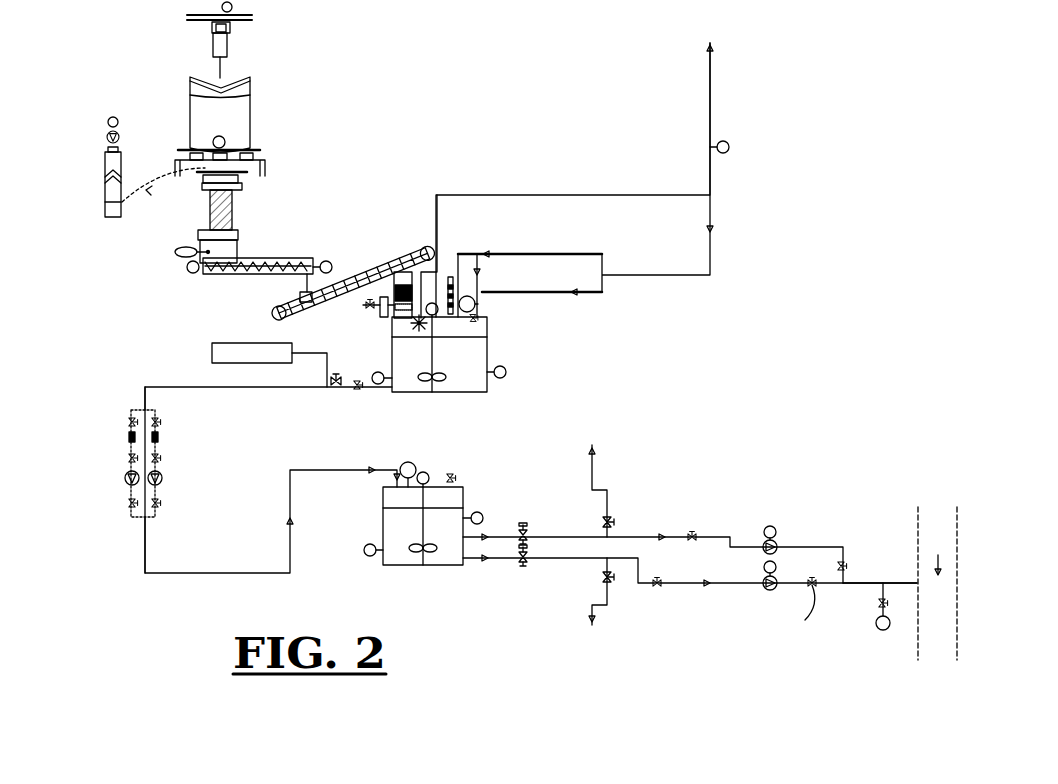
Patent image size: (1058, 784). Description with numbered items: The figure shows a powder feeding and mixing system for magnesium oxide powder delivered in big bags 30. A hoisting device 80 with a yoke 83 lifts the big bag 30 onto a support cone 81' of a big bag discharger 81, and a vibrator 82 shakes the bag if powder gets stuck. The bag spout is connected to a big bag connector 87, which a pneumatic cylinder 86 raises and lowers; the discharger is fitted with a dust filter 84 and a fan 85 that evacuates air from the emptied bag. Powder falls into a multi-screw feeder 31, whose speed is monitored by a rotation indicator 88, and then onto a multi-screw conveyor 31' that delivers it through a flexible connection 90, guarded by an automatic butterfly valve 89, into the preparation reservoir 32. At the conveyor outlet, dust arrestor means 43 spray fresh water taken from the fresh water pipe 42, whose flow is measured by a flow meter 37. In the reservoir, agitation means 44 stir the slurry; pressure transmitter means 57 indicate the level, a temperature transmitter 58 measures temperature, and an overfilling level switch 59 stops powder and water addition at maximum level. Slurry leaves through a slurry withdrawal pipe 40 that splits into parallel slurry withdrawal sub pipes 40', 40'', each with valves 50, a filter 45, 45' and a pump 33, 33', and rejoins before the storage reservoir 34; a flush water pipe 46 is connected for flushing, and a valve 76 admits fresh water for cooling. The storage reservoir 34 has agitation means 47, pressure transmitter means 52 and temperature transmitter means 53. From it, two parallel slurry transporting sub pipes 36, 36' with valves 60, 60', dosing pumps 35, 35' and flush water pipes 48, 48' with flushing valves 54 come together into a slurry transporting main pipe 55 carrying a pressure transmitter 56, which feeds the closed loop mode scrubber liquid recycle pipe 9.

The closed loop mode scrubber liquid recycle pipe 9 is at (937, 583).
The big bag 30 is at (221, 123).
The multi-screw feeder 31 is at (244, 262).
The multi-screw conveyor 31' is at (353, 270).
The preparation reservoir 32 is at (467, 380).
The pump 33 is at (98, 481).
The pump 33' is at (181, 489).
The storage reservoir 34 is at (443, 560).
The dosing pump 35 is at (781, 523).
The dosing pump 35' is at (755, 594).
The slurry transporting sub pipe 36 is at (655, 524).
The slurry transporting sub pipe 36' is at (690, 617).
The flow meter 37 is at (730, 147).
The slurry withdrawal pipe 40 is at (272, 498).
The slurry withdrawal sub pipe 40' is at (108, 480).
The slurry withdrawal sub pipe 40'' is at (211, 480).
The fresh water pipe 42 is at (710, 83).
The dust arrestor means 43 is at (418, 324).
The agitation means 44 is at (433, 383).
The filter 45 is at (94, 435).
The filter 45' is at (197, 442).
The flush water pipe 46 is at (212, 356).
The agitation means 47 is at (417, 552).
The flush water pipe 48 is at (608, 491).
The flush water pipe 48' is at (623, 605).
The valve 50 is at (128, 422).
The pressure transmitter means 52 is at (367, 545).
The temperature transmitter means 53 is at (485, 483).
The flushing valve 54 is at (616, 520).
The slurry transporting main pipe 55 is at (867, 582).
The pressure transmitter 56 is at (880, 630).
The pressure transmitter means 57 is at (379, 384).
The temperature transmitter 58 is at (507, 374).
The overfilling level switch 59 is at (476, 303).
The valve 60 is at (522, 504).
The valve 60' is at (530, 580).
The valve 76 is at (340, 382).
The hoisting device 80 is at (220, 46).
The big bag discharger 81 is at (239, 154).
The support cone 81' is at (277, 172).
The vibrator 82 is at (212, 142).
The yoke 83 is at (250, 77).
The dust filter 84 is at (110, 198).
The fan 85 is at (106, 137).
The pneumatic cylinder 86 is at (240, 183).
The big bag connector 87 is at (206, 184).
The rotation indicator 88 is at (326, 261).
The butterfly valve 89 is at (365, 305).
The connection 90 is at (213, 215).